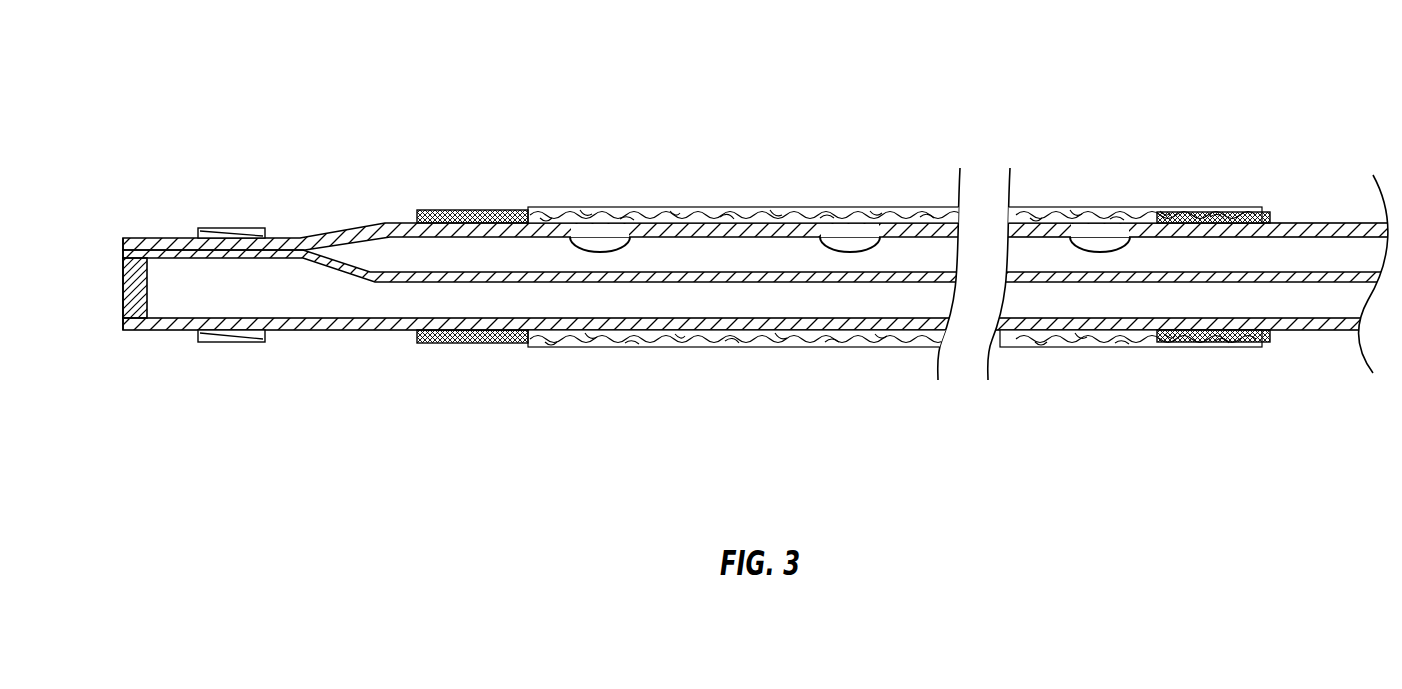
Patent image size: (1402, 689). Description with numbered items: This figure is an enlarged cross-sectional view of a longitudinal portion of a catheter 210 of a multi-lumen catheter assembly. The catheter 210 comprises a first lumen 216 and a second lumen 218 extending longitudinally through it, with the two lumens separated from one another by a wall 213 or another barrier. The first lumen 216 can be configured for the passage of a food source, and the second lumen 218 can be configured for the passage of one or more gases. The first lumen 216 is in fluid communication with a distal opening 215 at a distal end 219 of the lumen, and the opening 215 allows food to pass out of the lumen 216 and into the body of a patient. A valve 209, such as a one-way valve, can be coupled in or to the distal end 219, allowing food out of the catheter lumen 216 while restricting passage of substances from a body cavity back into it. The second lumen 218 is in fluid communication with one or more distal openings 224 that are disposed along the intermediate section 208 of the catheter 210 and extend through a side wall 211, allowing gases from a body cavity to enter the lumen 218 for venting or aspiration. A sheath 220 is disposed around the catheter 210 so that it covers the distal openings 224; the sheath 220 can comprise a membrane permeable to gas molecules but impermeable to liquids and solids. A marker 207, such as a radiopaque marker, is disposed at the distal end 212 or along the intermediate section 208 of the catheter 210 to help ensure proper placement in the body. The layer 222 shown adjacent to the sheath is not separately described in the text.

The marker 207 is at (236, 228).
The intermediate section 208 is at (1097, 235).
The valve 209 is at (127, 278).
The catheter 210 is at (521, 100).
The side wall 211 is at (1338, 228).
The distal end 212 is at (180, 183).
The wall 213 is at (1310, 280).
The distal opening 215 is at (115, 303).
The first lumen 216 is at (1048, 303).
The second lumen 218 is at (1212, 255).
The distal end of the lumen 219 is at (293, 292).
The sheath 220 is at (678, 208).
The braid layer 222 is at (471, 208).
The distal openings 224 is at (855, 240).